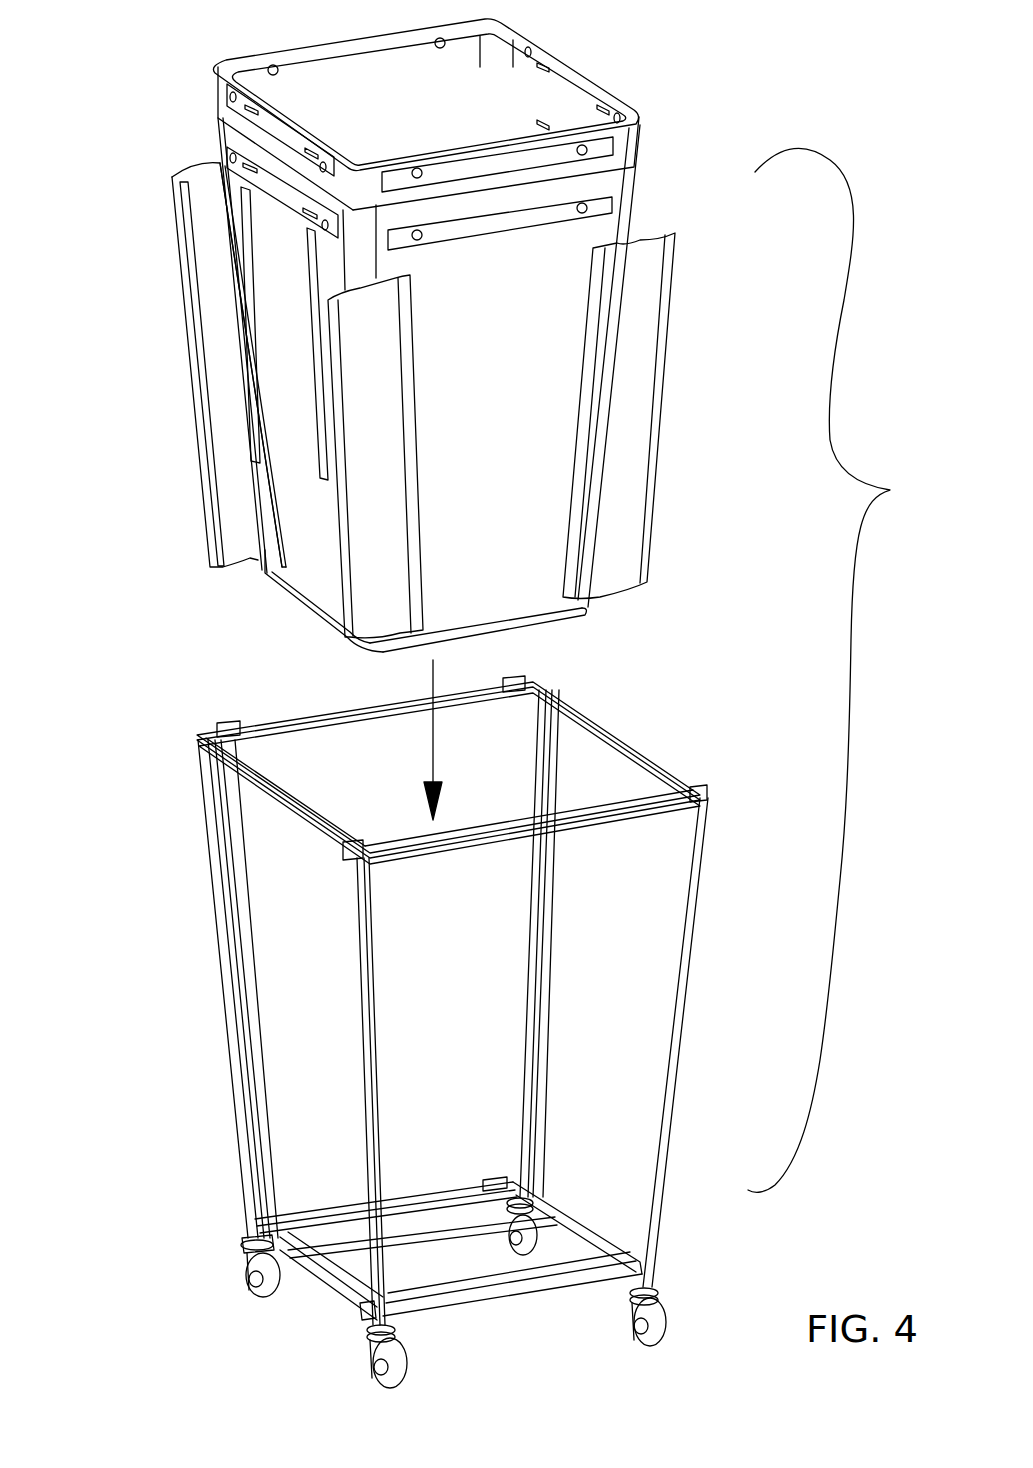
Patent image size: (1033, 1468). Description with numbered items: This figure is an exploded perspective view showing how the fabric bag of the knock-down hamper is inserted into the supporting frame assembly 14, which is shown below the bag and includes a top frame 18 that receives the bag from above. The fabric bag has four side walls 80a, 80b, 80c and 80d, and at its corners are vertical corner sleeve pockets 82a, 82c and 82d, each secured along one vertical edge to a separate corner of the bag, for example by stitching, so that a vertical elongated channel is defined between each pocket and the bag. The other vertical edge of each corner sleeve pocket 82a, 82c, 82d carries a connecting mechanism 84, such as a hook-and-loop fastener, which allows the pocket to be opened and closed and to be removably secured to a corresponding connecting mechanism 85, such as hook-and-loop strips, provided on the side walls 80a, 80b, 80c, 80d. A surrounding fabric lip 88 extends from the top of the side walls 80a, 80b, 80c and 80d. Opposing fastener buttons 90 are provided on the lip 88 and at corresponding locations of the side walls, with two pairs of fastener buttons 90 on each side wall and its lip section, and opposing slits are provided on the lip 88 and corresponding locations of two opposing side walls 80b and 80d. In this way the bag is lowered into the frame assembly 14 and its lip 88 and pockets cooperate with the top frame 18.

The supporting frame assembly 14 is at (404, 1020).
The top frame 18 is at (615, 750).
The side wall 80a is at (535, 390).
The side wall 80b is at (547, 108).
The side wall 80c is at (432, 133).
The side wall 80d is at (285, 325).
The corner sleeve pocket 82a is at (635, 318).
The corner sleeve pocket 82c is at (205, 215).
The corner sleeve pocket 82d is at (393, 553).
The connecting mechanism 84 is at (190, 312).
The connecting mechanism 85 is at (275, 460).
The fabric lip 88 is at (257, 134).
The fastener button 90 is at (576, 153).